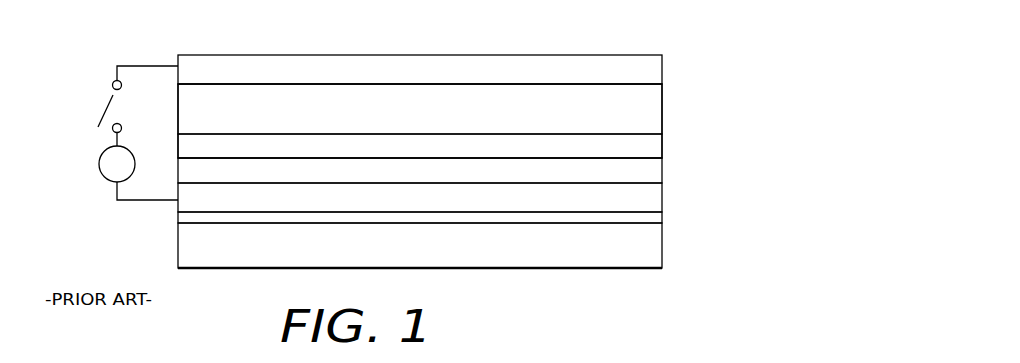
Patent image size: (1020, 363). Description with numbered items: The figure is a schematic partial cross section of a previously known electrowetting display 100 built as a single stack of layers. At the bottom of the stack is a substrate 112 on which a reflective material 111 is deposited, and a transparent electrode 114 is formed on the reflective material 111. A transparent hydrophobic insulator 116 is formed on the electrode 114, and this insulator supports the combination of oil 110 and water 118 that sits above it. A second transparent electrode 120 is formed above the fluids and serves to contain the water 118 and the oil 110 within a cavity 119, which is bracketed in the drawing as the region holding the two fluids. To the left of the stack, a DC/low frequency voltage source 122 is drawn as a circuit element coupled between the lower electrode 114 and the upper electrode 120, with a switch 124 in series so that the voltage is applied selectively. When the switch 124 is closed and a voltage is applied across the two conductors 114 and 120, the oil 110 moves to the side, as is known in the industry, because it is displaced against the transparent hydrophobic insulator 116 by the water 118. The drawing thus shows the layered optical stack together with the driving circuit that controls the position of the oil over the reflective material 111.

The electrowetting display 100 is at (236, 315).
The oil 110 is at (652, 147).
The reflective material 111 is at (655, 218).
The substrate 112 is at (633, 258).
The transparent electrode 114 is at (650, 198).
The transparent hydrophobic insulator 116 is at (652, 173).
The water 118 is at (652, 117).
The cavity 119 is at (721, 83).
The transparent electrode 120 is at (633, 62).
The DC/low frequency voltage source 122 is at (102, 176).
The switch 124 is at (117, 111).